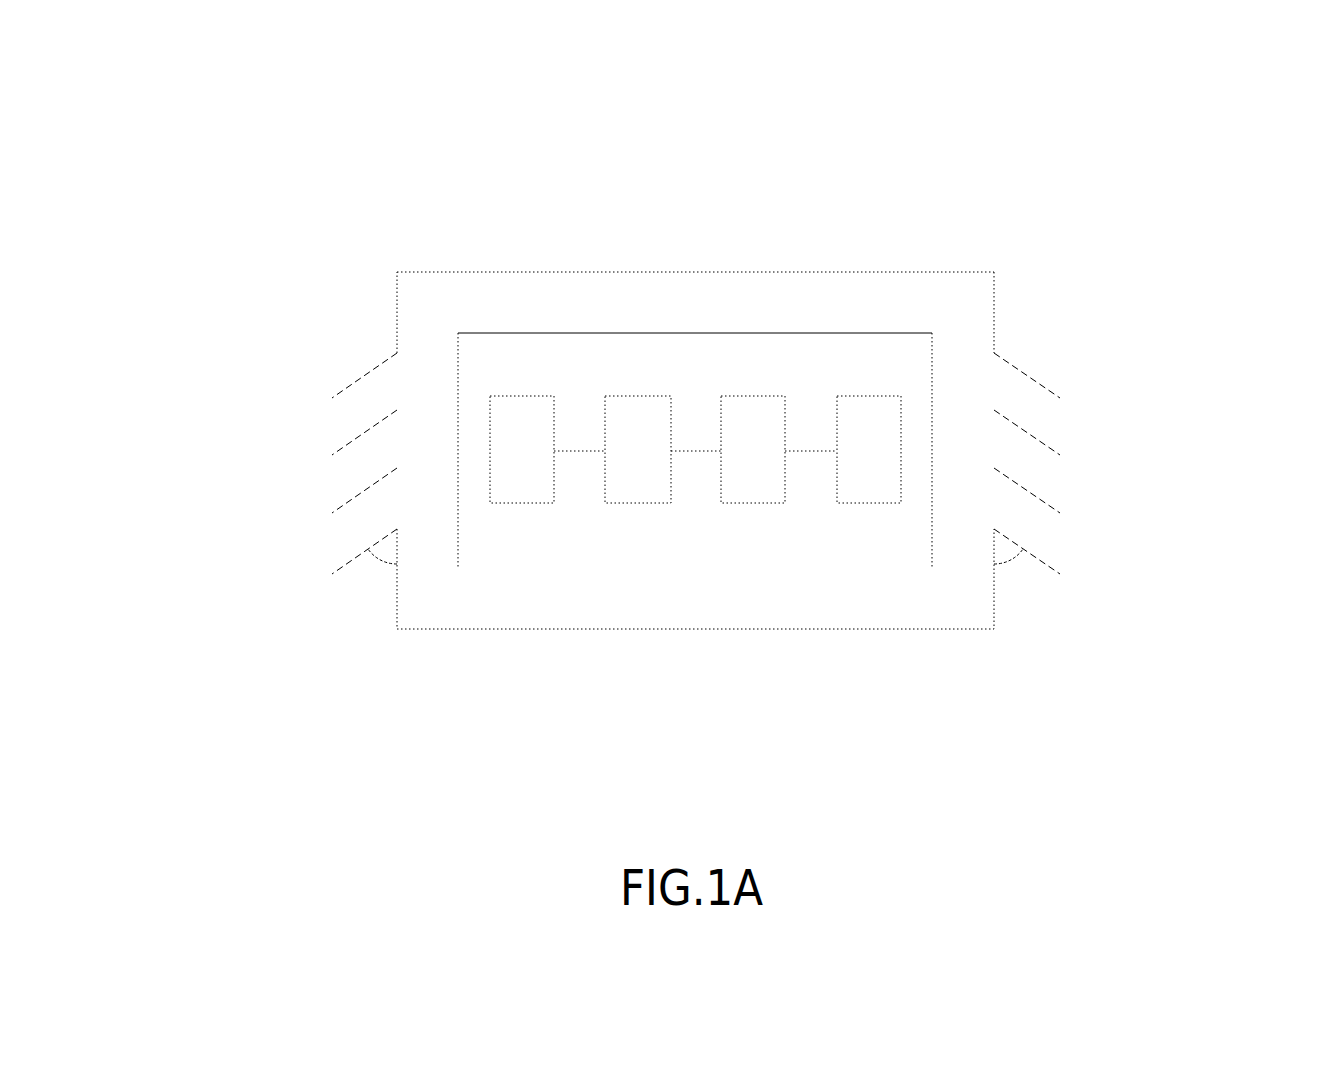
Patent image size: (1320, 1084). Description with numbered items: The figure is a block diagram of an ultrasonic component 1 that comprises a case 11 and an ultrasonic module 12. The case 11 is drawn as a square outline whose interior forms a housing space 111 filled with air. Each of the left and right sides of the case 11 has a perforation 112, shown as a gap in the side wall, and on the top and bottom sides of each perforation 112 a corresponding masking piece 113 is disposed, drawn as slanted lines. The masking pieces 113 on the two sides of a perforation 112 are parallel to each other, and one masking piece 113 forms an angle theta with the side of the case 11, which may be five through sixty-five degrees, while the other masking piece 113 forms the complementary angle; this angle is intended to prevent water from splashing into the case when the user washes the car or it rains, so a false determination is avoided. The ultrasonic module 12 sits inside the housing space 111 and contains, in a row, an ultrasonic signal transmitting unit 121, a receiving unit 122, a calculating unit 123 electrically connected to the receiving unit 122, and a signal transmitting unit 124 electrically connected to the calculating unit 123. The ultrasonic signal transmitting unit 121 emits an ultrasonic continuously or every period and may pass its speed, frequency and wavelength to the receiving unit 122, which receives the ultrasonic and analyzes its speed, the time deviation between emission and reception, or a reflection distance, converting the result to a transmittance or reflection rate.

The ultrasonic component 1 is at (260, 307).
The case 11 is at (887, 272).
The housing space 111 is at (653, 300).
The perforation 112 is at (393, 388).
The masking piece 113 is at (343, 563).
The ultrasonic module 12 is at (567, 333).
The ultrasonic signal transmitting unit 121 is at (522, 476).
The receiving unit 122 is at (640, 490).
The calculating unit 123 is at (752, 490).
The signal transmitting unit 124 is at (871, 485).